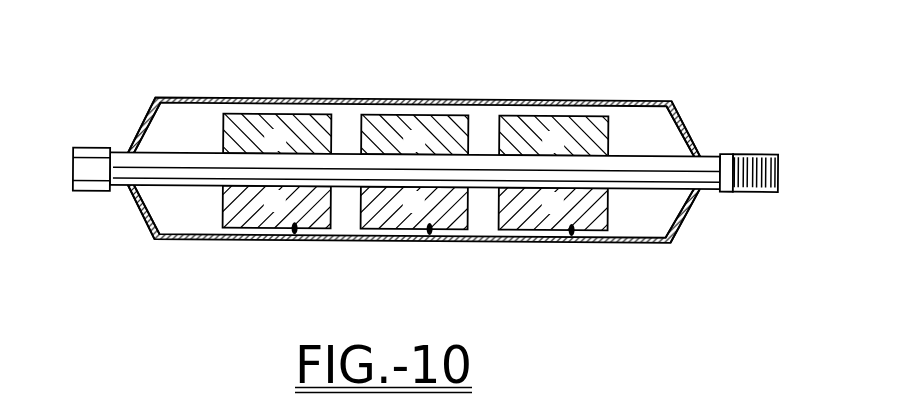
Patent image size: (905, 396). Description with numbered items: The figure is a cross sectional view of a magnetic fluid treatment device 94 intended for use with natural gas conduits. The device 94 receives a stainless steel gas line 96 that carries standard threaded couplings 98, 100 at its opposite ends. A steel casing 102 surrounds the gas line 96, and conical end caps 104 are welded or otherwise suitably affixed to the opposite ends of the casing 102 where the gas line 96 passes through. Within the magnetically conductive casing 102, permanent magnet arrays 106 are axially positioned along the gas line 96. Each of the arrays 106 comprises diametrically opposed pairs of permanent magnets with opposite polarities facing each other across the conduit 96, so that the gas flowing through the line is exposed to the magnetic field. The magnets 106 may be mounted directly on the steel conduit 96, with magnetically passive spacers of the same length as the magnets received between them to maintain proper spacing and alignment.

The magnetic fluid treatment device 94 is at (420, 151).
The stainless steel gas line 96 is at (348, 160).
The threaded coupling 98 is at (763, 192).
The threaded coupling 100 is at (95, 190).
The steel casing 102 is at (614, 100).
The conical end caps 104 is at (145, 115).
The permanent magnet arrays 106 is at (295, 235).